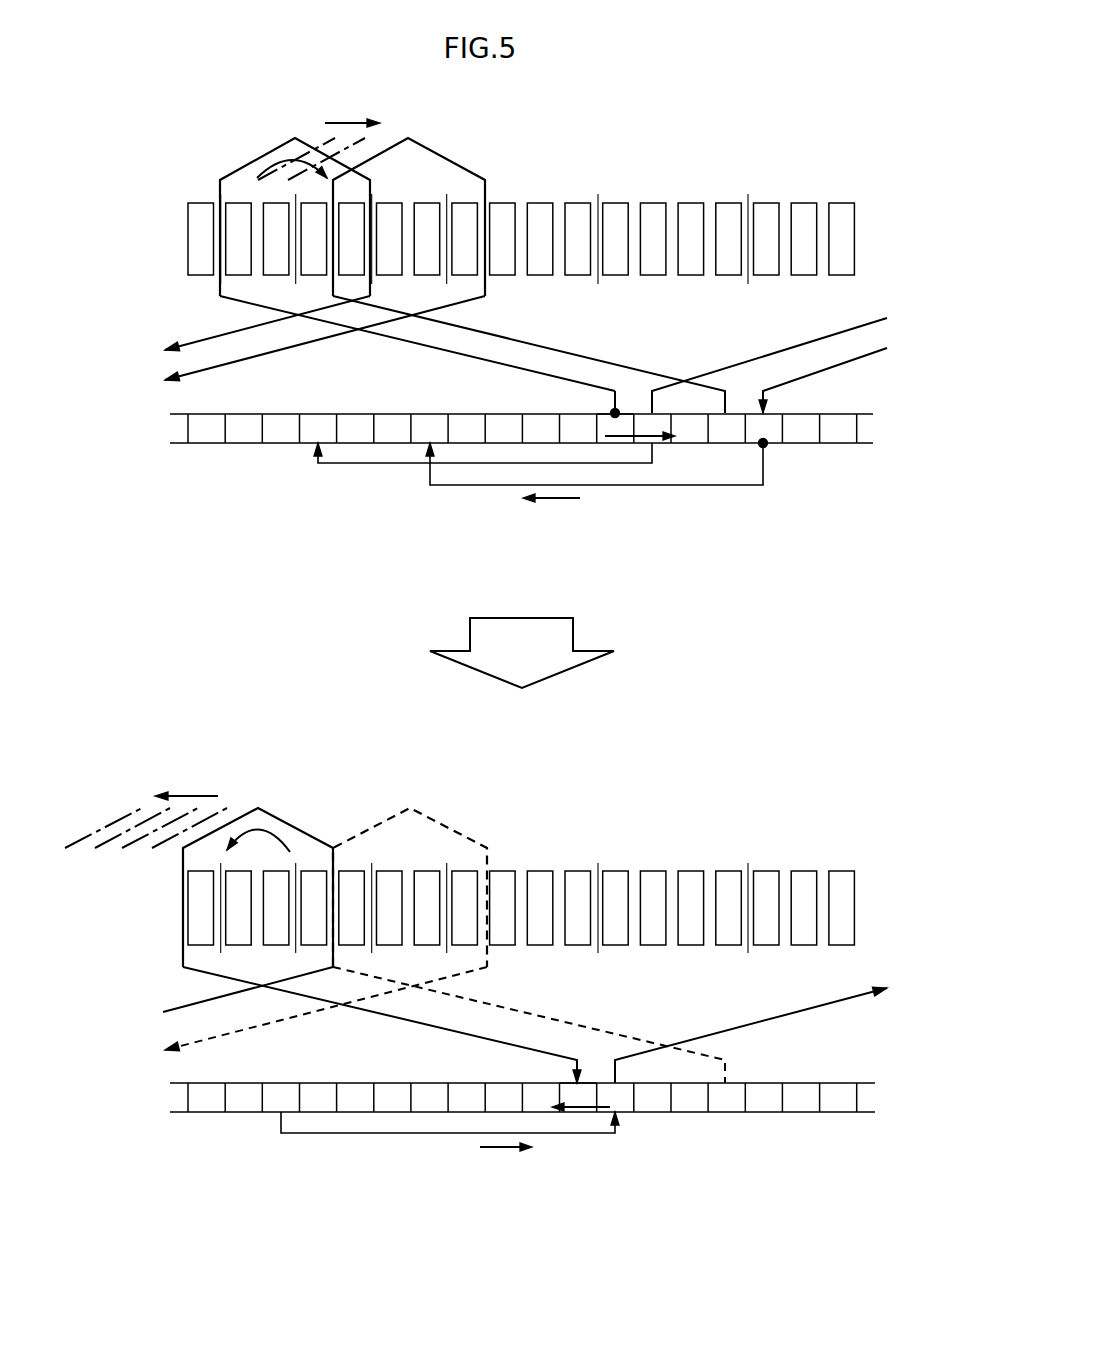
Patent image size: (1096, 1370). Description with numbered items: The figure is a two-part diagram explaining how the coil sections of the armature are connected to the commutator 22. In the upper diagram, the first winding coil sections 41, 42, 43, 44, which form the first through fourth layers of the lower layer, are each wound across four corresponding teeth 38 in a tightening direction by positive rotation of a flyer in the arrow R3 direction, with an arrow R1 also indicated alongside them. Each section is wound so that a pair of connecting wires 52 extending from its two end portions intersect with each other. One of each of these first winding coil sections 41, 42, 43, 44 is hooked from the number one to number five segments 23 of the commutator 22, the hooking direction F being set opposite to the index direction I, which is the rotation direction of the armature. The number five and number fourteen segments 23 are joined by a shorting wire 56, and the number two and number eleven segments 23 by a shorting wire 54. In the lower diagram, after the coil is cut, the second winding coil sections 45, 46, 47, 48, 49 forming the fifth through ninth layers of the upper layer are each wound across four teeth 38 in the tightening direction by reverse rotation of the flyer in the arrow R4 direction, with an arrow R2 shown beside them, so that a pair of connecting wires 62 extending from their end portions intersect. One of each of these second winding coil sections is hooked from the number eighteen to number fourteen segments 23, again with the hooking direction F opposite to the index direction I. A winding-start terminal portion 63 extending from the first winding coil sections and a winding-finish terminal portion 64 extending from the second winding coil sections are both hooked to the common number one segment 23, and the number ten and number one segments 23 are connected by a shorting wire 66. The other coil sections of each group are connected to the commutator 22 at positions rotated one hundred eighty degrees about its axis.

The commutator 22 is at (180, 445).
The segment 23 is at (607, 410).
The tooth 38 is at (242, 276).
The first winding coil section 41 is at (248, 162).
The first winding coil section 42 is at (313, 148).
The first winding coil section 43 is at (357, 148).
The first winding coil section 44 is at (447, 158).
The second winding coil section 45 is at (283, 820).
The second winding coil section 46 is at (233, 810).
The second winding coil section 47 is at (135, 847).
The second winding coil section 48 is at (157, 812).
The second winding coil section 49 is at (122, 817).
The connecting wire 52 is at (190, 348).
The shorting wire 54 is at (365, 465).
The shorting wire 56 is at (705, 488).
The connecting wire 62 is at (180, 1003).
The winding-start terminal portion 63 is at (617, 400).
The winding-finish terminal portion 64 is at (615, 1070).
The shorting wire 66 is at (400, 1135).
The arrow R1 direction R1 is at (348, 122).
The arrow R2 direction R2 is at (192, 797).
The positive rotation direction R3 is at (278, 160).
The reverse rotation direction R4 is at (287, 840).
The hooking direction F is at (627, 442).
The index direction I is at (550, 505).